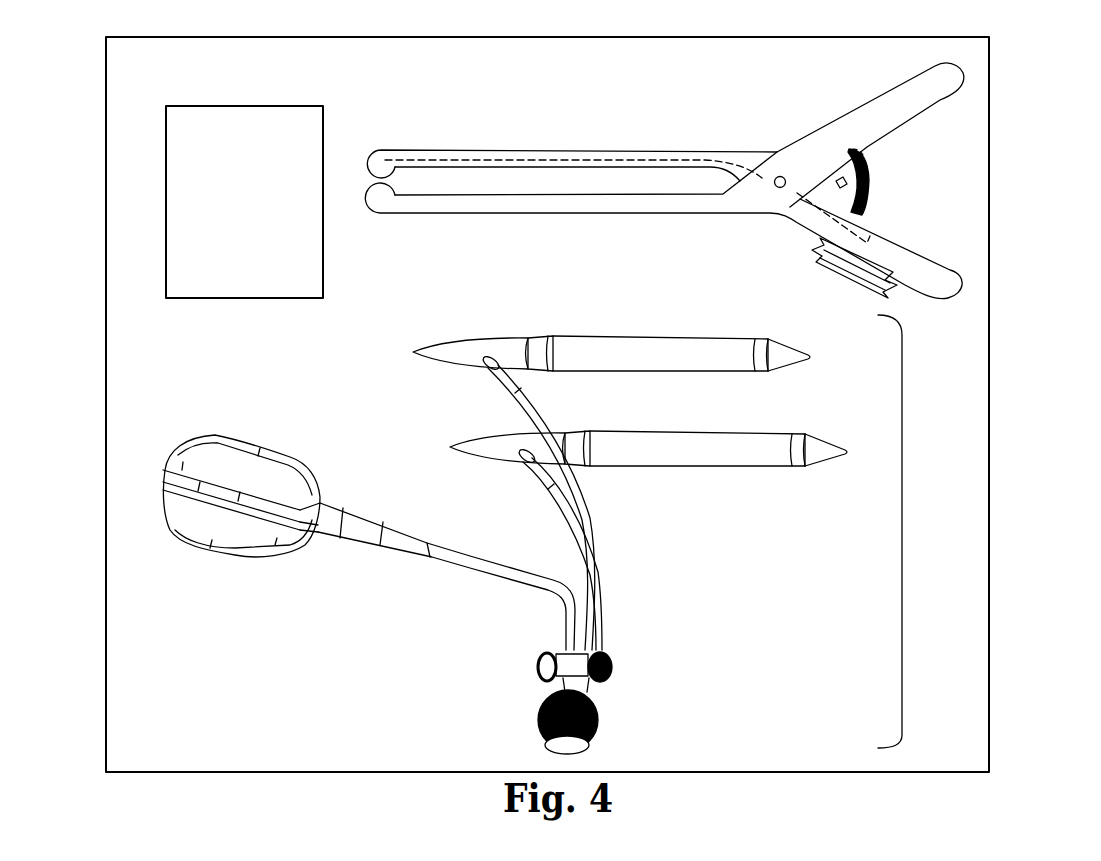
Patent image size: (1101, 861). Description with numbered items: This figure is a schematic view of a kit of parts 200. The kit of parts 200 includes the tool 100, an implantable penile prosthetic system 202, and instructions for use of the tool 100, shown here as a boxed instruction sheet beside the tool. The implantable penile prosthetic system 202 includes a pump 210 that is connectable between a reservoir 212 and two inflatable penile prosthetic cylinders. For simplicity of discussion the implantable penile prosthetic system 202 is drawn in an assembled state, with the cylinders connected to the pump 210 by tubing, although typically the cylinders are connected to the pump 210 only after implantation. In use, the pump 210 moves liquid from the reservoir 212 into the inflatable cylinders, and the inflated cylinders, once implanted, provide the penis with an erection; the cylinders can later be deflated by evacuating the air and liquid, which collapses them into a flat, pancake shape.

The tool 100 is at (711, 128).
The kit of parts 200 is at (989, 350).
The implantable penile prosthetic system 202 is at (902, 522).
The pump 210 is at (598, 722).
The reservoir 212 is at (233, 527).